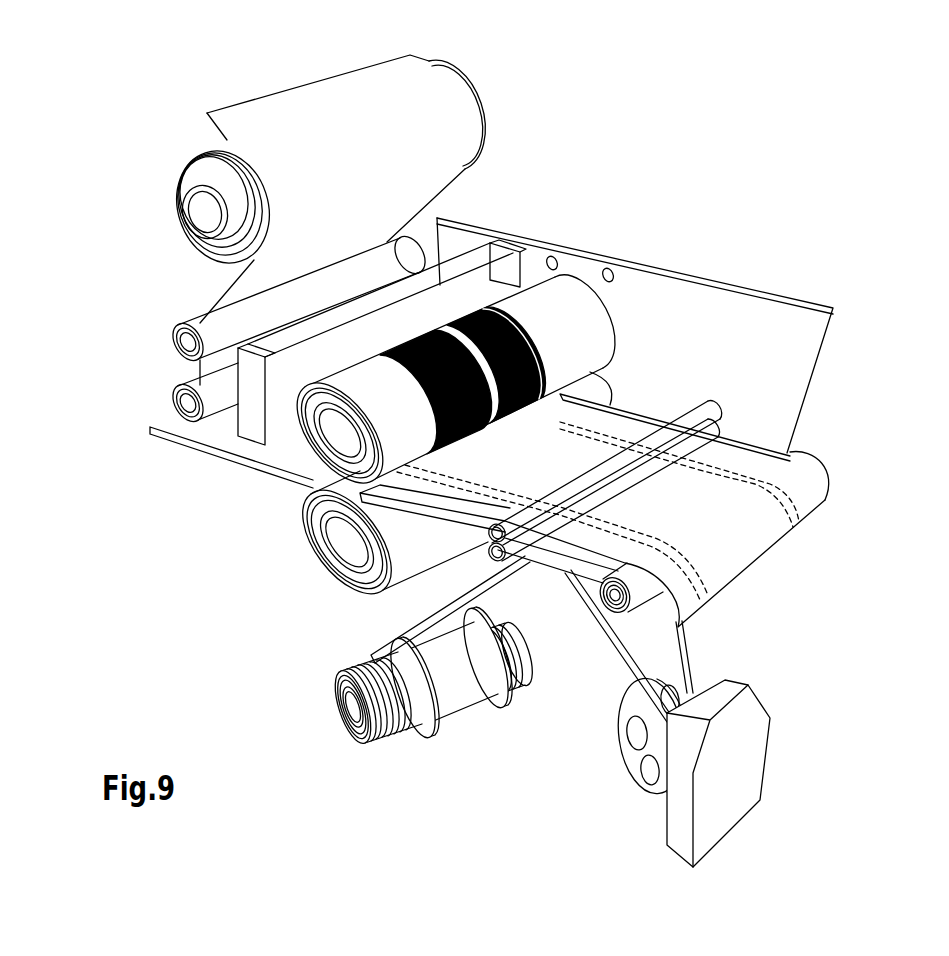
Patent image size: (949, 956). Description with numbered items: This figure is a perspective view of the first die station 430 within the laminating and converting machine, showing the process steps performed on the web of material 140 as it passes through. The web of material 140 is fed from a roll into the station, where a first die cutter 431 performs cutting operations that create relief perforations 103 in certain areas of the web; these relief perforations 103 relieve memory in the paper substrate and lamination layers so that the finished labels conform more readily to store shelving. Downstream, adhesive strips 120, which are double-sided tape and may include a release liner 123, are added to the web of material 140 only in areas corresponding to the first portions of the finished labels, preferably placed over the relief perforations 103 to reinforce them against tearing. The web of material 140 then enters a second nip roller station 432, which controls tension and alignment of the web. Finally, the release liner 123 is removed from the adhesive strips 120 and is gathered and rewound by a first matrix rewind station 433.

The first die station 430 is at (840, 148).
The web of material 140 is at (277, 268).
The first die cutter 431 is at (568, 302).
The relief perforations 103 is at (592, 437).
The second nip roller station 432 is at (722, 412).
The release liner 123 is at (644, 666).
The adhesive strips 120 is at (403, 719).
The first matrix rewind station 433 is at (652, 742).